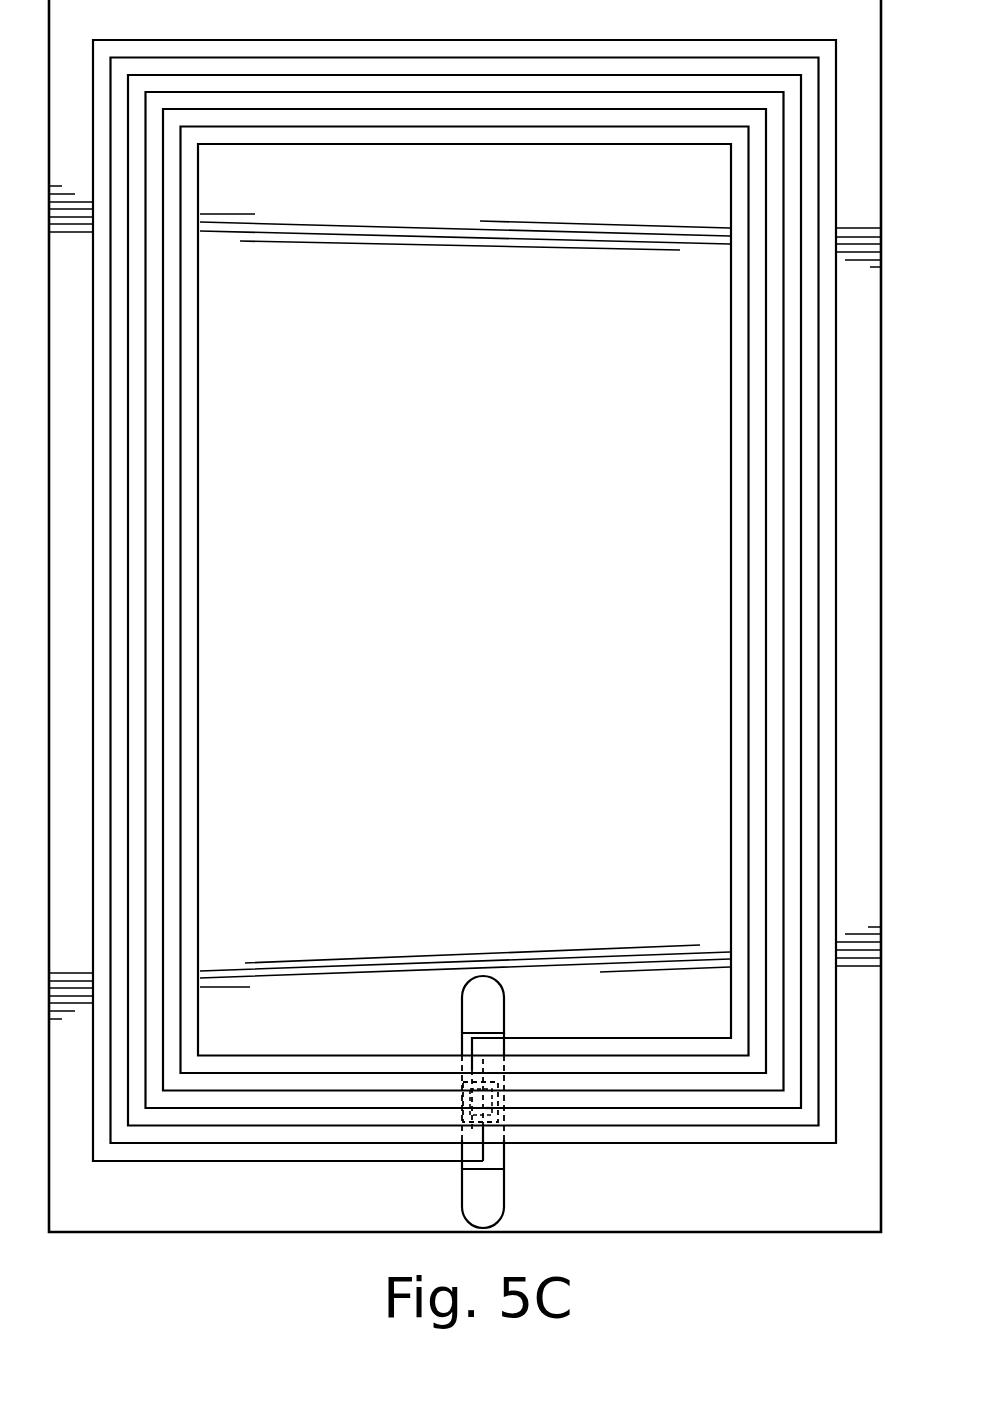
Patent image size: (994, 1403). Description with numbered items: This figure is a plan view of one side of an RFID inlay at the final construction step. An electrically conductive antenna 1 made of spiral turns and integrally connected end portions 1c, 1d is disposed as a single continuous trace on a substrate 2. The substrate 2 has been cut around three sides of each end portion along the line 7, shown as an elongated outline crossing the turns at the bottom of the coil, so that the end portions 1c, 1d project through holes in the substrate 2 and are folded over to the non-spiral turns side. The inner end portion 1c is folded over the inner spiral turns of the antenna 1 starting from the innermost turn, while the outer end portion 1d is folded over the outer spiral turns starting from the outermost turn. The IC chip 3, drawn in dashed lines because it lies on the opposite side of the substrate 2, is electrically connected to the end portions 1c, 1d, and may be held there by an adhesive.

The antenna 1 is at (191, 388).
The end portion 1c is at (465, 1102).
The end portion 1d is at (498, 1113).
The substrate 2 is at (82, 1213).
The IC chip 3 is at (503, 1096).
The line 7 is at (462, 992).